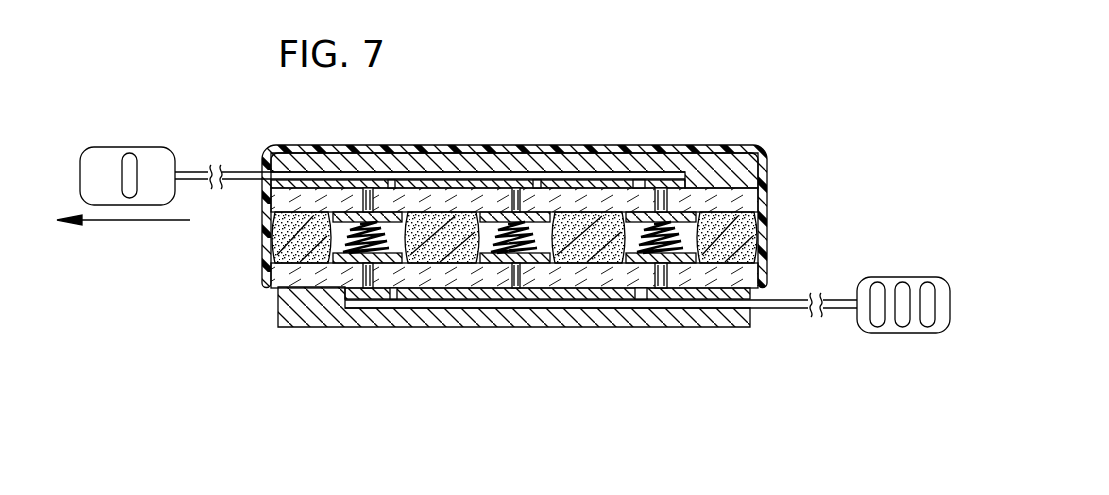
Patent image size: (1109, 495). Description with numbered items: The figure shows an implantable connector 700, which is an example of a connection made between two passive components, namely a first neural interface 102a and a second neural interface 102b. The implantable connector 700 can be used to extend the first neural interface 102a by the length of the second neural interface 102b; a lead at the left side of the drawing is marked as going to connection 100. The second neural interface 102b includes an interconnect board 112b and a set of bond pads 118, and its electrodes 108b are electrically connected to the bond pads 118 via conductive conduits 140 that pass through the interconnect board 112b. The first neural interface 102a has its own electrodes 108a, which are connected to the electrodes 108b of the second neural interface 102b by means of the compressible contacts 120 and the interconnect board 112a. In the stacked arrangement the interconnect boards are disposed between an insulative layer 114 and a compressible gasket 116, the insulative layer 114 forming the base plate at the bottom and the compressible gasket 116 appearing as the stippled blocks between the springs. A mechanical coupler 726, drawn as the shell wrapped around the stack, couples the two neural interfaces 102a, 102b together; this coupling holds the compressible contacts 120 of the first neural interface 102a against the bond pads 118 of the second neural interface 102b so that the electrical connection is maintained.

The implantable connector 700 is at (682, 100).
The mechanical coupler 726 is at (765, 152).
The second neural interface 102b is at (253, 145).
The first neural interface 102a is at (253, 317).
The electrodes 108b is at (660, 187).
The electrodes 108a is at (656, 291).
The interconnect board 112b is at (748, 205).
The interconnect board 112a is at (737, 275).
The conductive conduits 140 is at (657, 207).
The compressible gasket 116 is at (754, 240).
The bond pads 118 is at (680, 212).
The compressible contacts 120 is at (677, 254).
The insulative layer 114 is at (380, 322).
The connection 100 is at (123, 248).